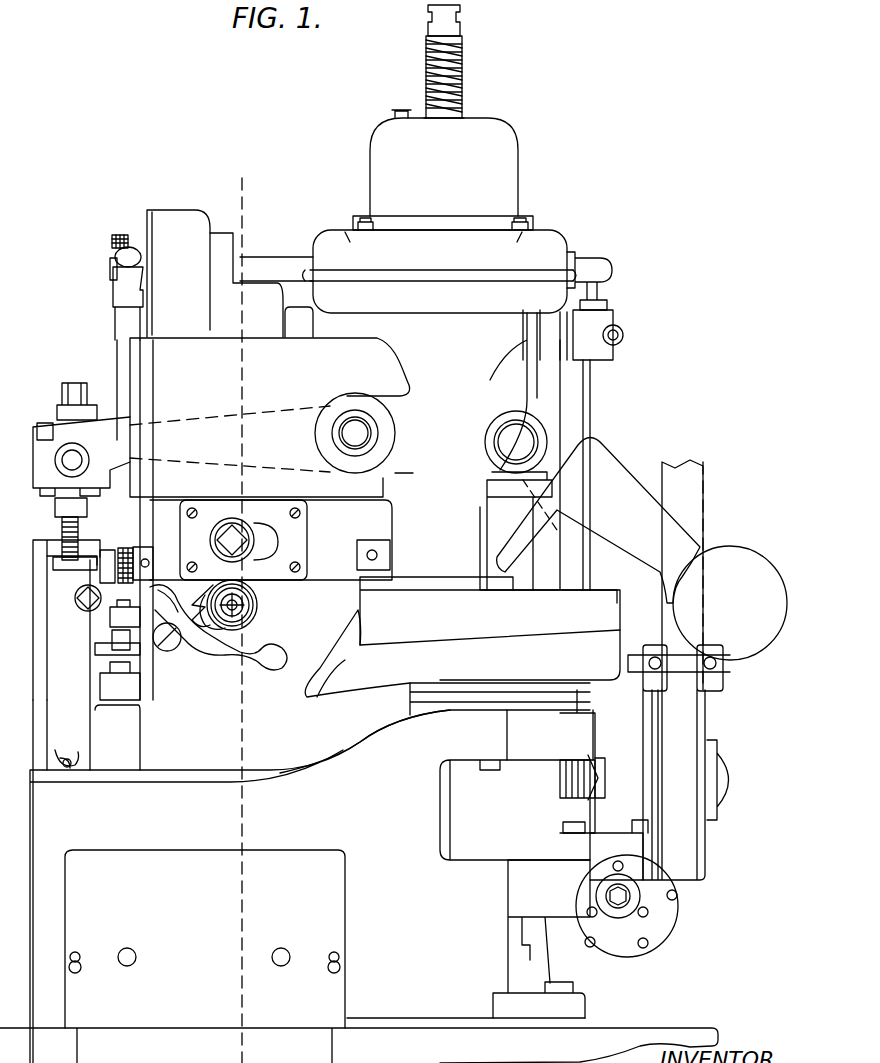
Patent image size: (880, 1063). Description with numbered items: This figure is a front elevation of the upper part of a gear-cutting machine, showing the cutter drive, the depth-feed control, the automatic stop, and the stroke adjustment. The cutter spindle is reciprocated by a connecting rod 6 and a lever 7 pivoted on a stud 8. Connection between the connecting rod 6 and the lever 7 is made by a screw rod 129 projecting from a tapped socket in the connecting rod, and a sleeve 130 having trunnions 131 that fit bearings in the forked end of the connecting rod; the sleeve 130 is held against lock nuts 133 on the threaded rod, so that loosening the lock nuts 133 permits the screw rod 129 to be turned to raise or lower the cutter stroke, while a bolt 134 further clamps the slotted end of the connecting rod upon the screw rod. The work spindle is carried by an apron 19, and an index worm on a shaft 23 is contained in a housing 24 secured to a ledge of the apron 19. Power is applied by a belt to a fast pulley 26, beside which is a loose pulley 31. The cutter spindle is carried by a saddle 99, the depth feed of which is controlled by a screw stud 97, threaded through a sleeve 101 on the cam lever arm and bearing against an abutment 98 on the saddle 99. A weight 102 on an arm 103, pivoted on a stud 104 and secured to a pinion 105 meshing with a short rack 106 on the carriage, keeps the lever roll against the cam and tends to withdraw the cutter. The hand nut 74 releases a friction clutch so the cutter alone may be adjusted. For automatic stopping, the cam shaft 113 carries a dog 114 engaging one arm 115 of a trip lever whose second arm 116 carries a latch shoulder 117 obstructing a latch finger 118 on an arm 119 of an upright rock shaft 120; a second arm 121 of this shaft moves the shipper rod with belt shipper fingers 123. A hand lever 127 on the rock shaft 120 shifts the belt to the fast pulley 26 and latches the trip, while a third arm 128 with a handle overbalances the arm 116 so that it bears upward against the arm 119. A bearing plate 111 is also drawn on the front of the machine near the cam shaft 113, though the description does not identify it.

The connecting rod 6 is at (76, 724).
The lever 7 is at (122, 431).
The stud 8 is at (345, 437).
The apron 19 is at (560, 815).
The shaft 23 is at (620, 905).
The housing 24 is at (665, 908).
The pulley 26 is at (600, 723).
The loose pulley 31 is at (708, 856).
The nut or hand wheel 74 is at (117, 236).
The screw stud 97 is at (121, 555).
The abutment 98 is at (126, 576).
The saddle 99 is at (489, 477).
The sleeve 101 is at (90, 558).
The weight 102 is at (730, 568).
The arm 103 is at (613, 492).
The stud 104 is at (512, 440).
The pinion 105 is at (495, 452).
The short rack 106 is at (505, 485).
The bearing plate 111 is at (241, 534).
The shaft 113 is at (258, 604).
The dog 114 is at (248, 627).
The arm 115 is at (196, 596).
The second arm 116 is at (112, 641).
The latch shoulder 117 is at (120, 648).
The latch finger 118 is at (132, 640).
The arm 119 is at (110, 618).
The rock shaft 120 is at (124, 330).
The second arm 121 is at (134, 690).
The belt shipper fingers 123 is at (706, 676).
The hand lever 127 is at (125, 257).
The third arm 128 is at (268, 660).
The screw rod 129 is at (62, 531).
The sleeve 130 is at (66, 492).
The trunnions 131 is at (80, 458).
The lock nuts 133 is at (60, 412).
The bolt 134 is at (86, 598).